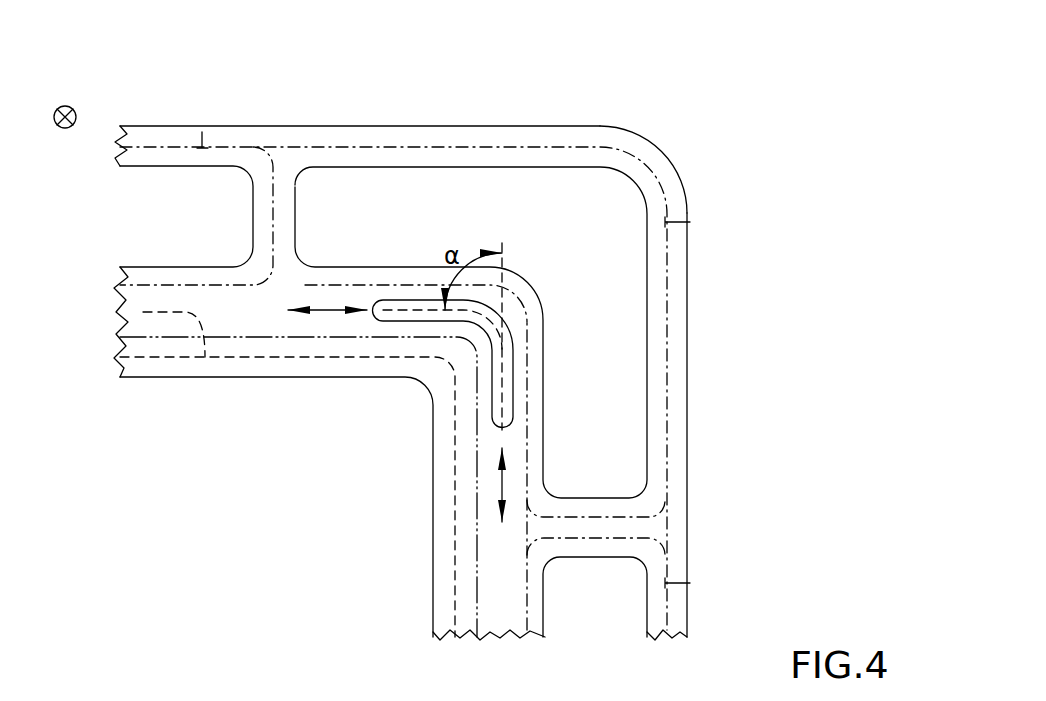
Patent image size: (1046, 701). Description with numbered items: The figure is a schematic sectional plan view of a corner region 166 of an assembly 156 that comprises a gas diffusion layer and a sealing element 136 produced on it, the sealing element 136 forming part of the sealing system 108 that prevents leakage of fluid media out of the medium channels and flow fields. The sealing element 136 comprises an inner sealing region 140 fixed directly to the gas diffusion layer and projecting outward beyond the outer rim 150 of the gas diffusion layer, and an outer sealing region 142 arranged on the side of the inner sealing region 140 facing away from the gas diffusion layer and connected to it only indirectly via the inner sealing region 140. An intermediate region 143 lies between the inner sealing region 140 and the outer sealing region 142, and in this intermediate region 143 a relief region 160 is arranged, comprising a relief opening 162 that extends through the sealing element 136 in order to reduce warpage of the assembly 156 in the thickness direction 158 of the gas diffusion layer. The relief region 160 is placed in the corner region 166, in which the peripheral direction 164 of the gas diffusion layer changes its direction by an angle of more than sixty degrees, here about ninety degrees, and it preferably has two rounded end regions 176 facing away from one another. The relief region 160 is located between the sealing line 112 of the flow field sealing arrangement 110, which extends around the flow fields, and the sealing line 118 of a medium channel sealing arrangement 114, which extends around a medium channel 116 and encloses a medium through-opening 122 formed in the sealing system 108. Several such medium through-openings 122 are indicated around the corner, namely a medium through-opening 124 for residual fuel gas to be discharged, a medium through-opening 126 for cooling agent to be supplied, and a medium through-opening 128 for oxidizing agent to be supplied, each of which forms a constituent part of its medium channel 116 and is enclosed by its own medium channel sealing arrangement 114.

The sealing system 108 is at (487, 125).
The flow field sealing arrangement 110 is at (235, 360).
The sealing line 112 is at (190, 338).
The medium channel sealing arrangement 114 is at (168, 122).
The medium channel 116 is at (235, 208).
The sealing line 118 is at (207, 118).
The medium through-opening 122 is at (180, 230).
The medium through-opening 124 is at (235, 250).
The medium through-opening 126 is at (621, 306).
The medium through-opening 128 is at (623, 660).
The first sealing element 136 is at (657, 531).
The inner sealing region 140 is at (475, 370).
The outer sealing region 142 is at (688, 324).
The intermediate region 143 is at (467, 330).
The outer rim 150 is at (118, 306).
The assembly 156 is at (702, 135).
The thickness direction 158 is at (63, 104).
The relief region 160 is at (532, 352).
The relief opening 162 is at (490, 398).
The peripheral direction 164 is at (330, 309).
The corner region 166 is at (630, 98).
The rounded end region 176 is at (375, 342).